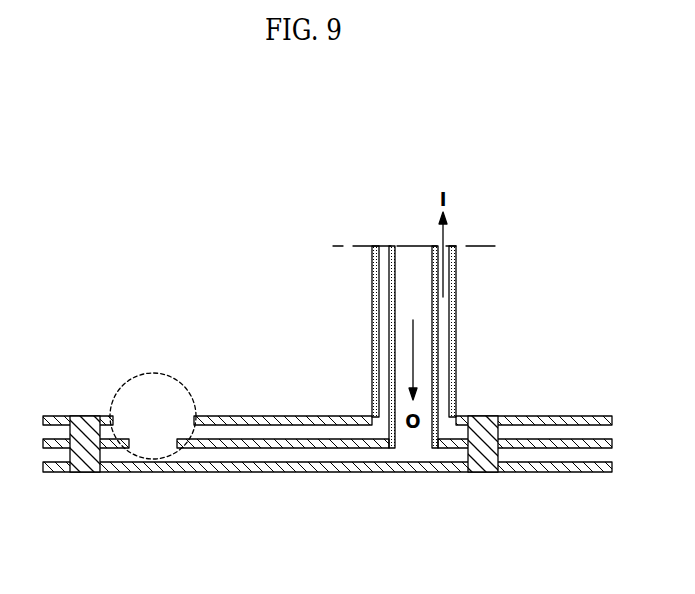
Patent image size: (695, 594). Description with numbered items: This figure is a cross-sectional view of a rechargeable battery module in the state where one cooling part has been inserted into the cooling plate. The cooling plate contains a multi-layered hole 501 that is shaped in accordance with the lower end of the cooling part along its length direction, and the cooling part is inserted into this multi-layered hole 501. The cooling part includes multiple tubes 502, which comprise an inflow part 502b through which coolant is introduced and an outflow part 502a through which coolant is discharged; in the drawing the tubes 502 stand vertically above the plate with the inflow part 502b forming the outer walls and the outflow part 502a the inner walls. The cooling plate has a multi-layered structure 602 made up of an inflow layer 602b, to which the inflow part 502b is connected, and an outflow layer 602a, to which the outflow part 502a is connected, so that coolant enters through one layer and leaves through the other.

The multi-layered hole 501 is at (180, 372).
The tubes 502 is at (467, 347).
The outflow part 502a is at (423, 378).
The inflow part 502b is at (445, 330).
The multi-layered structure 602 is at (327, 497).
The outflow layer 602a is at (445, 457).
The inflow layer 602b is at (470, 437).